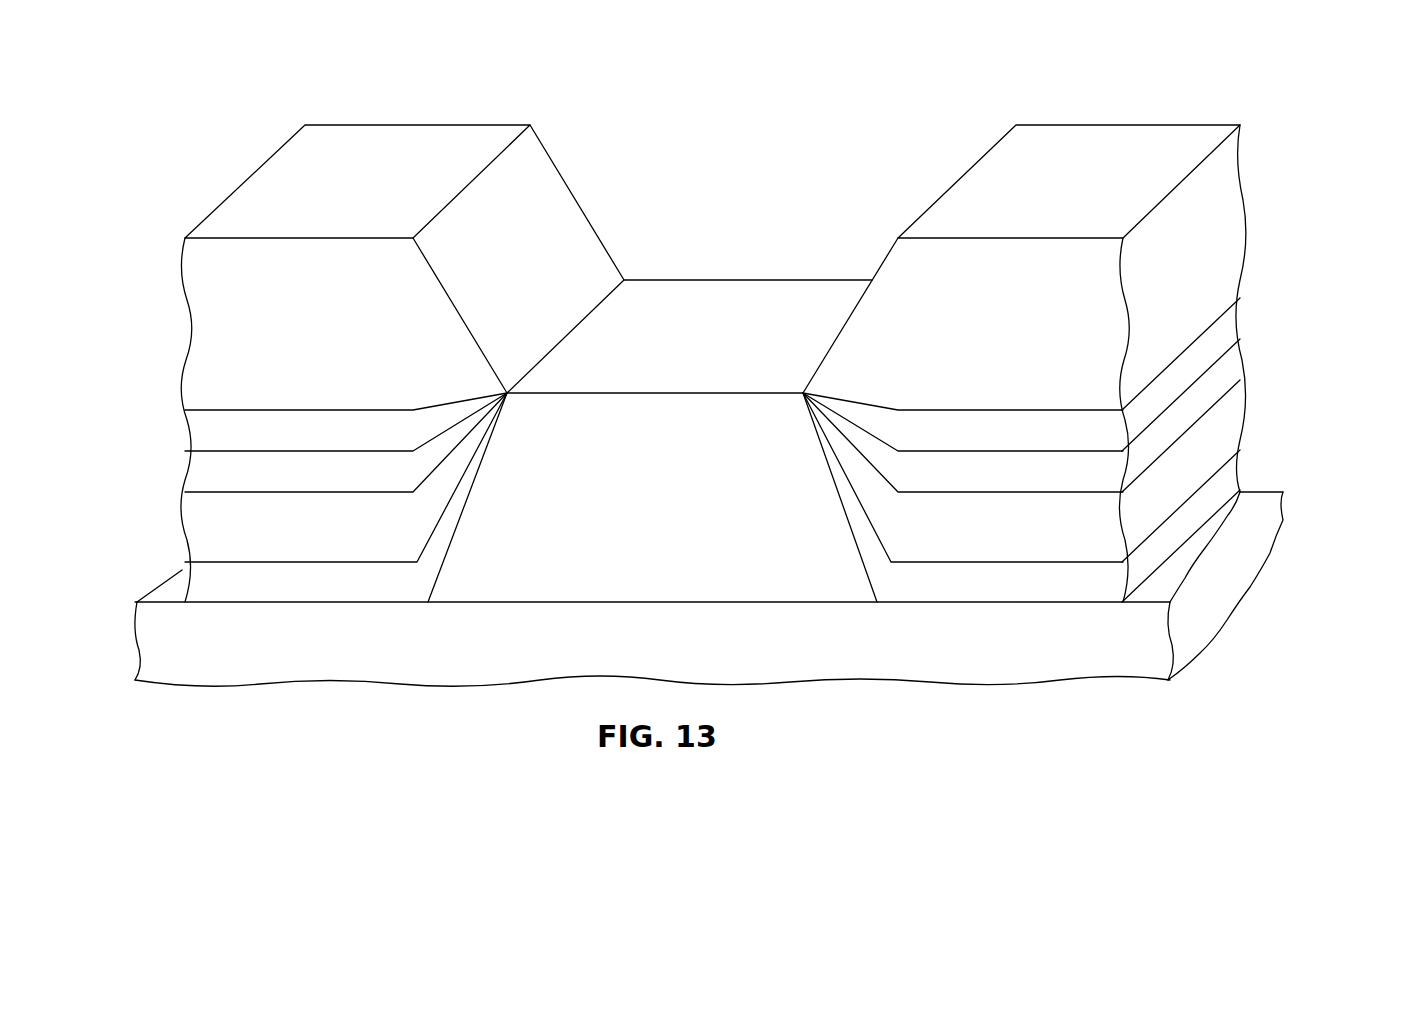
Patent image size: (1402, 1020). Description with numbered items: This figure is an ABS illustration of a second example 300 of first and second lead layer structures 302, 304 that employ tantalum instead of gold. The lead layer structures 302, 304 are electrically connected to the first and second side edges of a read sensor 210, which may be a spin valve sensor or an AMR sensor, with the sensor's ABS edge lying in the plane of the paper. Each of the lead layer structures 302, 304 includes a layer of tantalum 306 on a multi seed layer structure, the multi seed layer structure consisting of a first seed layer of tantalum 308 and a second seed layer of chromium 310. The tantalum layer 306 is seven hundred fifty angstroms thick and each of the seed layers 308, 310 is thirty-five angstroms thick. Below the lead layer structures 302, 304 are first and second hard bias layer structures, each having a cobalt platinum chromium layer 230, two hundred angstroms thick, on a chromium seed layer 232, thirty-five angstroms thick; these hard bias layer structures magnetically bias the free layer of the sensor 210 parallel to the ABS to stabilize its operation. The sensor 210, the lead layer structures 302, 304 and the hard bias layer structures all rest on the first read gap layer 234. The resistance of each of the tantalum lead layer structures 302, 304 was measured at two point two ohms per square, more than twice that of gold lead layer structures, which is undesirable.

The second example of first and second lead layer structures 300 is at (806, 102).
The first lead layer structure 302 is at (408, 140).
The second lead layer structure 304 is at (1109, 140).
The read sensor 210 is at (698, 302).
The layer of tantalum 306 is at (191, 349).
The second seed layer of chromium 310 is at (198, 434).
The first seed layer of tantalum 308 is at (191, 470).
The cobalt platinum chromium layer 230 is at (191, 517).
The chromium seed layer 232 is at (191, 584).
The first read gap layer 234 is at (1257, 566).